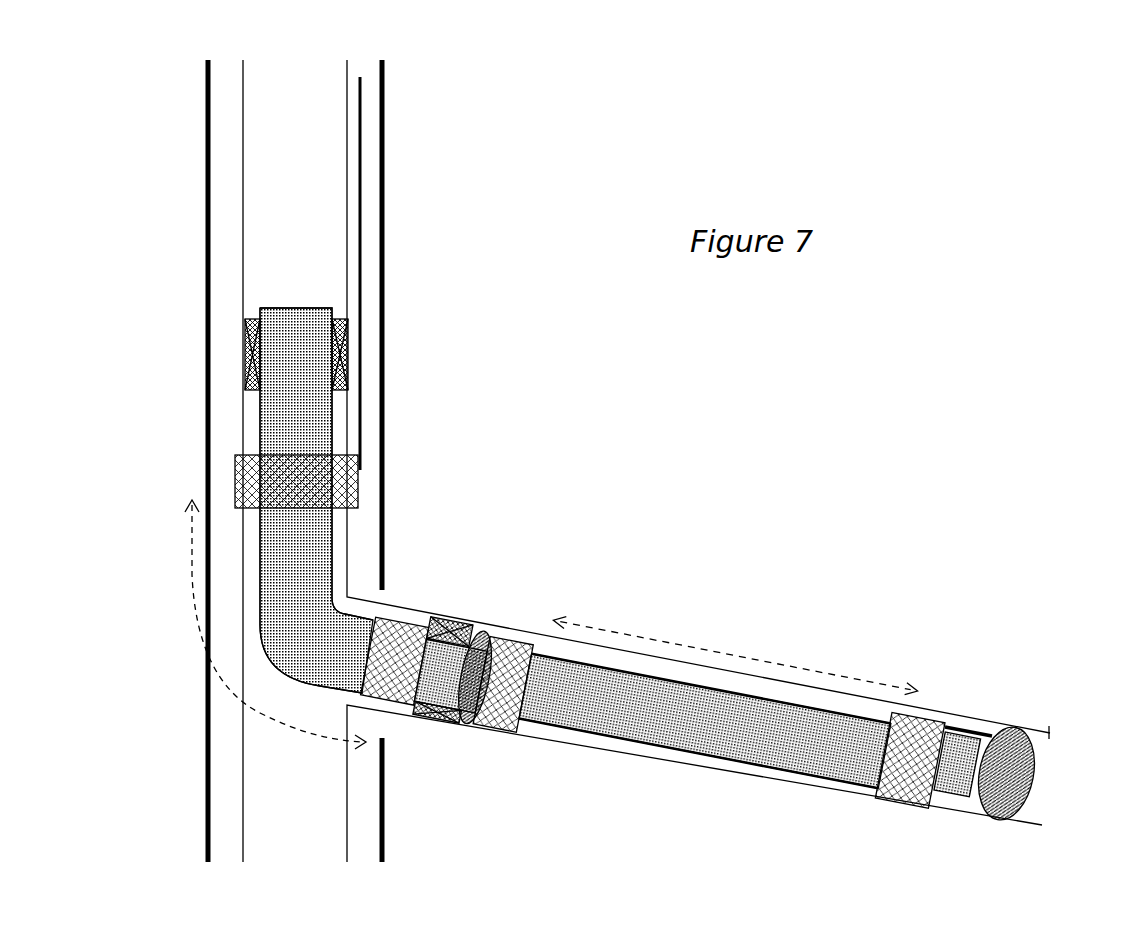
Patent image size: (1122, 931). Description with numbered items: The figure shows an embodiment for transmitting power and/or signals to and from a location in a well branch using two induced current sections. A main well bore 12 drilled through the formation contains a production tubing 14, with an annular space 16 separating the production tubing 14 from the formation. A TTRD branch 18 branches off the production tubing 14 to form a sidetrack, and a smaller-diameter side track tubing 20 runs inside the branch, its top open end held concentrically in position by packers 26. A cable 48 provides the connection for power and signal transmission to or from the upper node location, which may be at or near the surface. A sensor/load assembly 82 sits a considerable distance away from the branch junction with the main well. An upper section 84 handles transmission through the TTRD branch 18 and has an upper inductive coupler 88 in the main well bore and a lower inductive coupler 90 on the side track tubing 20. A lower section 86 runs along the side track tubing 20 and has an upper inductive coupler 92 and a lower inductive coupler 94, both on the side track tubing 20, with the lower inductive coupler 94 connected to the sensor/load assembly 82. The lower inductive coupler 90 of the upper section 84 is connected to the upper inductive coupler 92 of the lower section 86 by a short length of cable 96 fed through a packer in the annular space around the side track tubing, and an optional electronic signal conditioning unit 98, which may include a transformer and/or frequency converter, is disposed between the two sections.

The main well bore 12 is at (210, 805).
The production tubing 14 is at (243, 187).
The annular space 16 is at (215, 283).
The TTRD branch 18 is at (948, 718).
The side track tubing 20 is at (668, 745).
The packers 26 is at (350, 352).
The cable 48 is at (362, 245).
The sensor/load assembly 82 is at (1020, 728).
The upper section 84 is at (215, 680).
The lower section 86 is at (722, 650).
The upper inductive coupler 88 is at (235, 470).
The lower inductive coupler 90 is at (405, 628).
The upper inductive coupler 92 is at (505, 732).
The lower inductive coupler 94 is at (885, 797).
The cable 96 is at (437, 715).
The electronic signal conditioning unit 98 is at (492, 620).